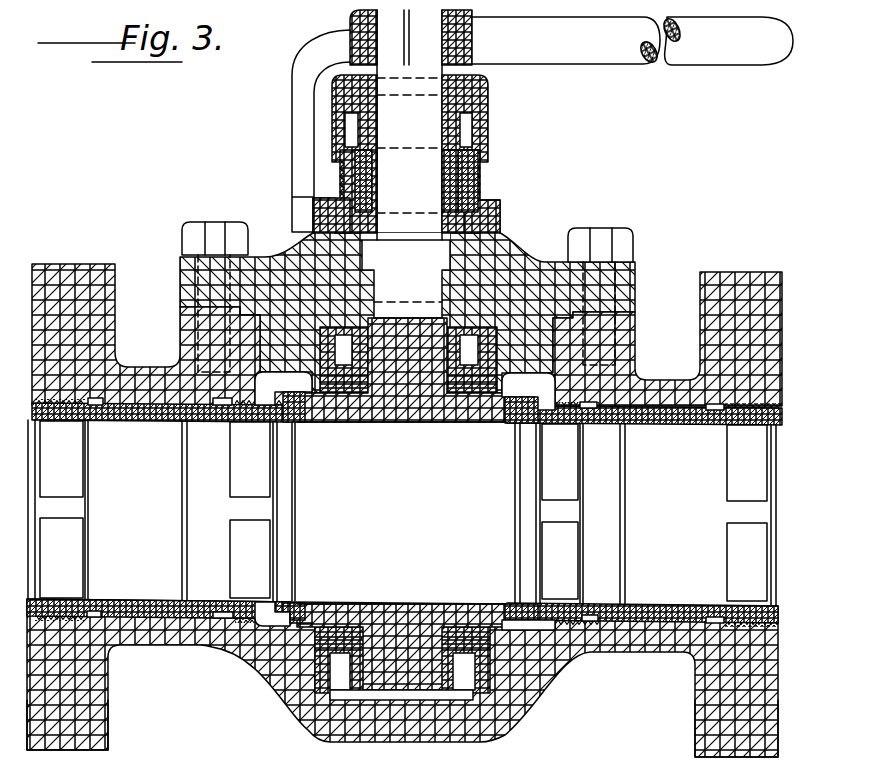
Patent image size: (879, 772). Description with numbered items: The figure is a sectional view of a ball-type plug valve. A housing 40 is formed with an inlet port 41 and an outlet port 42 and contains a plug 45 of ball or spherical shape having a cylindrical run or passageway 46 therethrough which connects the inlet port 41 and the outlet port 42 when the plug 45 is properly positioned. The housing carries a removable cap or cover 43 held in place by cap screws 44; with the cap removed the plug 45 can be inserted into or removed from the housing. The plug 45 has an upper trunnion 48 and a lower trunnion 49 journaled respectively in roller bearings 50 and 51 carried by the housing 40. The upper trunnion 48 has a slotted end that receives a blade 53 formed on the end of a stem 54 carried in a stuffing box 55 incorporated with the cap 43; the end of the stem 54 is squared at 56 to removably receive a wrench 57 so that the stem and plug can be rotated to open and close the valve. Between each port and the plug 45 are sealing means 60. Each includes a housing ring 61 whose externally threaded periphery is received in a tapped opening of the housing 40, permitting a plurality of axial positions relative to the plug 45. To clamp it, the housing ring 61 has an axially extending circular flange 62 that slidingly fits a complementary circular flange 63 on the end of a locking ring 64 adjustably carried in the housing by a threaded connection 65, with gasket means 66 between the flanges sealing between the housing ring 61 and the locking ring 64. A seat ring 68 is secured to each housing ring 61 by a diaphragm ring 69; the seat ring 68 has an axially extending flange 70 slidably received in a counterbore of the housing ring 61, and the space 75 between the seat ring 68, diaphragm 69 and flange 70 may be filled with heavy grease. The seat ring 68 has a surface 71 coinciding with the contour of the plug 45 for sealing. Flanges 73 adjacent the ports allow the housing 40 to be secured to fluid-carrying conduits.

The housing 40 is at (272, 663).
The inlet port 41 is at (212, 575).
The outlet port 42 is at (662, 592).
The cap or cover 43 is at (525, 265).
The cap screws 44 is at (625, 247).
The plug 45 is at (417, 403).
The cylindrical run or passageway 46 is at (402, 423).
The upper trunnion 48 is at (503, 262).
The lower trunnion 49 is at (405, 667).
The roller bearing 50 is at (490, 342).
The roller bearing 51 is at (490, 668).
The blade 53 is at (477, 207).
The stem 54 is at (420, 163).
The stuffing box 55 is at (470, 177).
The squared end 56 is at (425, 42).
The wrench 57 is at (737, 48).
The sealing means 60 is at (257, 623).
The housing ring 61 is at (233, 421).
The circular flange 62 is at (187, 420).
The circular flange 63 is at (182, 407).
The locking ring 64 is at (116, 423).
The threaded connection 65 is at (68, 403).
The gasket means 66 is at (200, 403).
The seat ring 68 is at (303, 602).
The diaphragm ring 69 is at (300, 600).
The axially extending flange 70 is at (295, 445).
The surface 71 is at (317, 602).
The flanges 73 is at (87, 717).
The space 75 is at (520, 423).